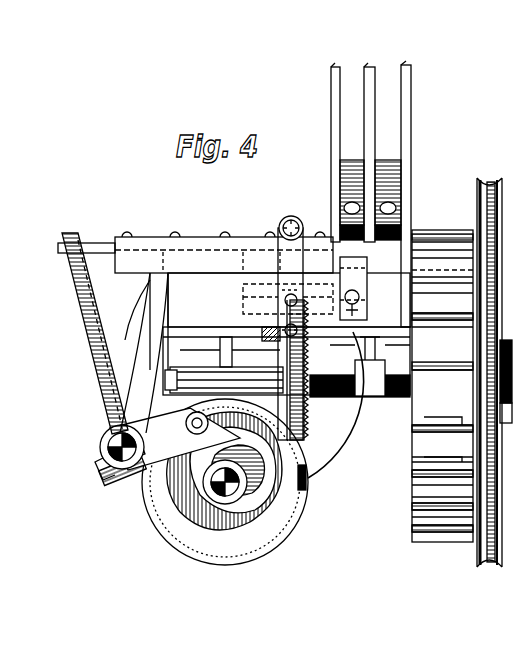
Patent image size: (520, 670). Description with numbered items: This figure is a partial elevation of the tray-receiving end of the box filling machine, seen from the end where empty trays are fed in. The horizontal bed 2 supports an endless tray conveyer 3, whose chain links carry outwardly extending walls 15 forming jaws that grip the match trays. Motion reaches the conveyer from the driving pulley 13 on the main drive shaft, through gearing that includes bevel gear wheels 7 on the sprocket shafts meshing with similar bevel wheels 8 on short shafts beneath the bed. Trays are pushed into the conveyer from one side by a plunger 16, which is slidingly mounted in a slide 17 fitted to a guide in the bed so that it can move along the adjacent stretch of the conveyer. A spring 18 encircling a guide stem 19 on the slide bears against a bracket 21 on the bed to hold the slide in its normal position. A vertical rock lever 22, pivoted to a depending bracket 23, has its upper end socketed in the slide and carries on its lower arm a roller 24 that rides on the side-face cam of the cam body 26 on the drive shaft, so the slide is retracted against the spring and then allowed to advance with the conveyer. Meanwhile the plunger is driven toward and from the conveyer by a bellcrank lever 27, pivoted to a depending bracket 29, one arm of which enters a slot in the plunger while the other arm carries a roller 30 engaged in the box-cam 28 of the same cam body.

The horizontal bed 2 is at (267, 311).
The endless tray conveyer 3 is at (430, 235).
The bevel gear wheels 7 is at (318, 408).
The bevel gear wheels 8 is at (270, 338).
The driving pulley 13 is at (412, 423).
The outwardly extending walls 15 is at (447, 232).
The plunger 16 is at (93, 243).
The slide 17 is at (192, 262).
The spring 18 is at (292, 216).
The guide stem 19 is at (303, 227).
The bracket 21 is at (283, 222).
The vertical rock lever 22 is at (310, 425).
The depending bracket 23 is at (318, 452).
The roller 24 is at (305, 490).
The cam body 26 is at (262, 555).
The bellcrank lever 27 is at (86, 300).
The box-cam 28 is at (205, 530).
The depending bracket 29 is at (137, 383).
The roller 30 is at (148, 490).